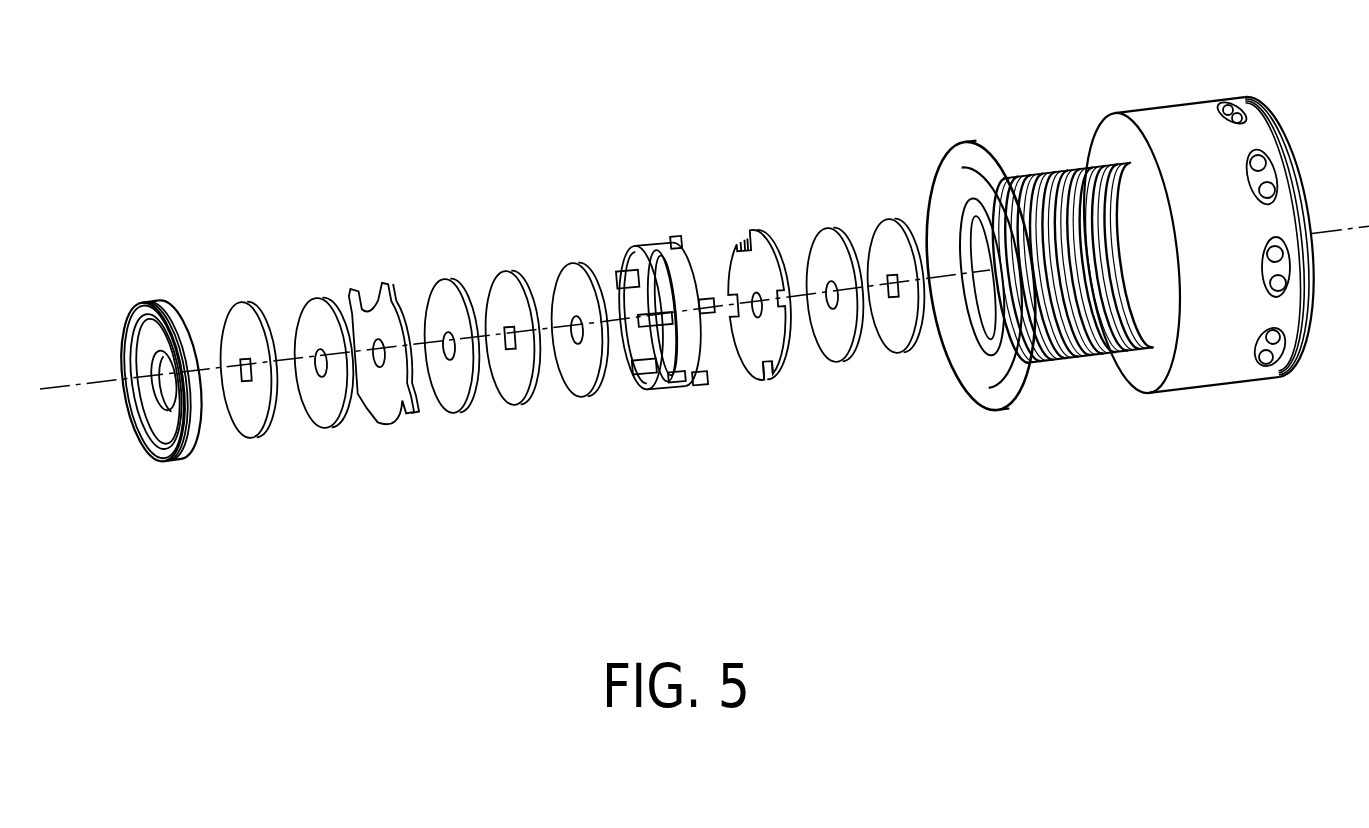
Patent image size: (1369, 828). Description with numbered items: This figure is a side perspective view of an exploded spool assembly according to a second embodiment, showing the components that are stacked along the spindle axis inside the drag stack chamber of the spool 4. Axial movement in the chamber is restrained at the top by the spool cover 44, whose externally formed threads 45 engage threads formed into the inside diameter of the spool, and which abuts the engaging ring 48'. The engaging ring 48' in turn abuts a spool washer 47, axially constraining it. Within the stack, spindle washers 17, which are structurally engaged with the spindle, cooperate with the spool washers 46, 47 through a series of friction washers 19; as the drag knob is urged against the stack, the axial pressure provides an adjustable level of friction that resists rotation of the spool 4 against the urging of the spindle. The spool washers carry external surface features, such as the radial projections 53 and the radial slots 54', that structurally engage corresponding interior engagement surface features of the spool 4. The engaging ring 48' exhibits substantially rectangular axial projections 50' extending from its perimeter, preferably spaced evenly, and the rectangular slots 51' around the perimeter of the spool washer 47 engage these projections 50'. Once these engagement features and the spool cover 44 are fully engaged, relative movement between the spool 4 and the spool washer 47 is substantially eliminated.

The spool 4 is at (1171, 133).
The spindle washer 17 is at (242, 325).
The friction washer 19 is at (310, 320).
The spool cover 44 is at (169, 302).
The externally formed threads 45 is at (170, 455).
The spool washer 46 is at (372, 308).
The spool washer 47 is at (743, 265).
The engaging ring 48' is at (606, 280).
The projections 50' is at (658, 261).
The slots 51' is at (663, 436).
The radial projections 53 is at (404, 420).
The radial slots 54' is at (794, 416).